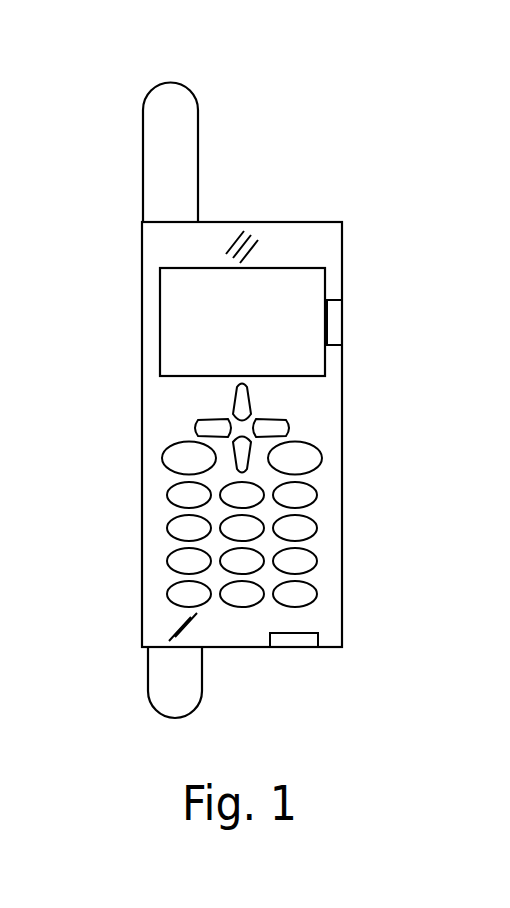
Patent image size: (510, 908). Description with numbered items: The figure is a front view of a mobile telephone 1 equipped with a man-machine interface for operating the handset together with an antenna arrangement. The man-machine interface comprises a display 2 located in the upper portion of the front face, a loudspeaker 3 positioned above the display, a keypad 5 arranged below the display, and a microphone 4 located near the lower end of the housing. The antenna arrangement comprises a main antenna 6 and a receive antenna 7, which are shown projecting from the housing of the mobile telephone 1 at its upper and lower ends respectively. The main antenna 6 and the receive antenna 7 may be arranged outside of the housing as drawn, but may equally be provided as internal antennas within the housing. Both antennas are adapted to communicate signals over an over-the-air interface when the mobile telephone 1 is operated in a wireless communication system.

The mobile telephone 1 is at (295, 198).
The display 2 is at (161, 308).
The loudspeaker 3 is at (232, 245).
The microphone 4 is at (180, 622).
The keypad 5 is at (172, 495).
The main antenna 6 is at (143, 143).
The receive antenna 7 is at (148, 668).